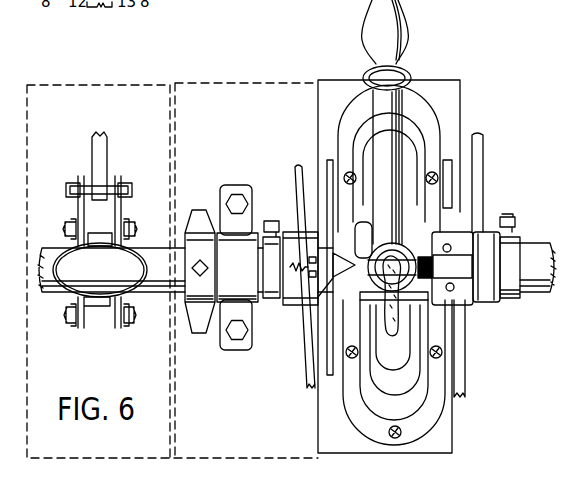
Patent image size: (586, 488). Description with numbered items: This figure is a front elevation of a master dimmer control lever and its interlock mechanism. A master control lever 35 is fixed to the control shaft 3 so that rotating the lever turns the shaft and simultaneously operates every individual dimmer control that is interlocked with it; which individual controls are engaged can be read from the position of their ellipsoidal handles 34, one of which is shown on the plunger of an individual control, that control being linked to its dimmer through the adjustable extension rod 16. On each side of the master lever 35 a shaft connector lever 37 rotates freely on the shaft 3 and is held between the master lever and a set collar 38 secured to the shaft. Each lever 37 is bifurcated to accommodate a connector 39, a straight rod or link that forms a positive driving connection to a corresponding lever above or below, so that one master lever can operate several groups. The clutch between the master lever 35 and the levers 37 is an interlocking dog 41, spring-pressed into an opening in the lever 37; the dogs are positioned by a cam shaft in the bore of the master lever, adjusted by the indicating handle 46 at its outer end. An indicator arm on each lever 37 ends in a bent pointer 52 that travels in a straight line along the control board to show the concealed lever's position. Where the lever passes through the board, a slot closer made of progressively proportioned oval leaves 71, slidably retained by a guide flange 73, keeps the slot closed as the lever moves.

The control shaft 3 is at (546, 295).
The adjustable extension rod 16 is at (98, 153).
The handle 34 is at (72, 300).
The master control lever 35 is at (404, 110).
The shaft connector lever 37 is at (492, 230).
The set collar 38 is at (202, 301).
The connector 39 is at (294, 172).
The interlocking dog 41 is at (430, 272).
The indicating handle 46 is at (392, 334).
The pointer 52 is at (312, 303).
The leaves 71 is at (413, 400).
The guide flange 73 is at (424, 422).